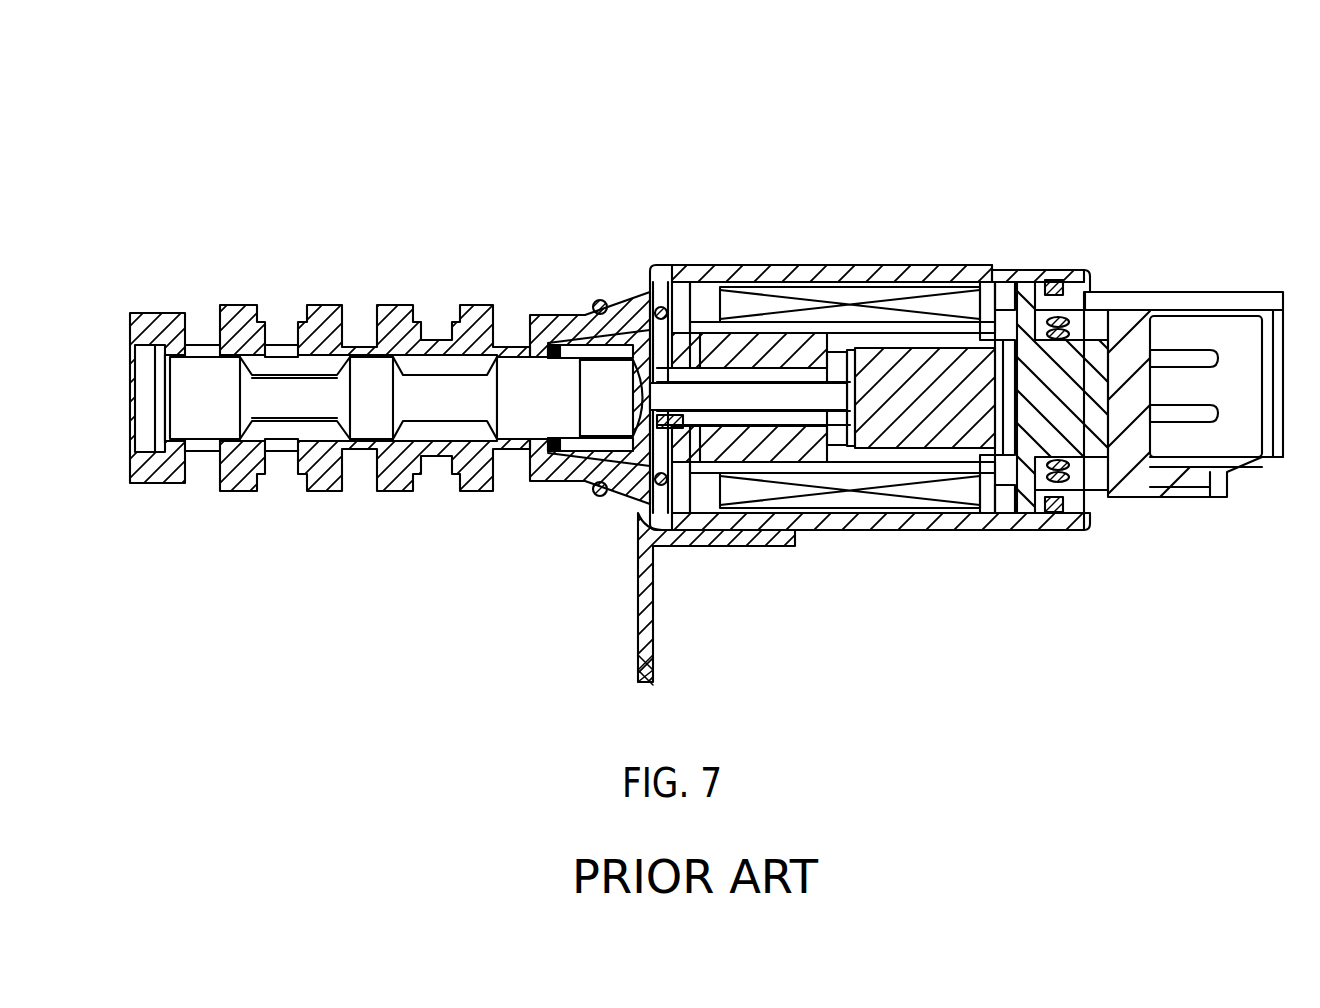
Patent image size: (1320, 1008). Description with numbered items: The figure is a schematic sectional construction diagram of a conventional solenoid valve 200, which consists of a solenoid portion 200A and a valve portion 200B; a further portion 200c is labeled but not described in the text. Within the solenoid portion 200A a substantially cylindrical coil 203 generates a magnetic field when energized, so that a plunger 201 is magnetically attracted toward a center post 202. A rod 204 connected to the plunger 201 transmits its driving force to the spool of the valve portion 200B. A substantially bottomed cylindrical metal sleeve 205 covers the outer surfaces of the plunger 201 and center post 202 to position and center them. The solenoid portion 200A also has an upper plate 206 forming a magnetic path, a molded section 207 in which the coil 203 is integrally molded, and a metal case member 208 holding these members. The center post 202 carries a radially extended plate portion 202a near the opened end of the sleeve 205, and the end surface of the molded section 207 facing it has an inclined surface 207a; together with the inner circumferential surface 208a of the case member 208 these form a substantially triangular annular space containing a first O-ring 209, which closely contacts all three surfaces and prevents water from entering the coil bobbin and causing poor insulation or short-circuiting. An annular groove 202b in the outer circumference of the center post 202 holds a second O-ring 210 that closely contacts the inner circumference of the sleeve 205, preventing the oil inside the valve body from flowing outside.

The solenoid valve 200 is at (330, 145).
The solenoid portion 200A is at (930, 205).
The valve portion 200B is at (430, 250).
The valve housing connecting portion 200c is at (545, 310).
The plunger 201 is at (950, 528).
The center post 202 is at (828, 530).
The plate portion 202a is at (690, 265).
The annular groove 202b is at (772, 532).
The coil 203 is at (957, 300).
The rod 204 is at (760, 392).
The sleeve 205 is at (876, 305).
The upper plate 206 is at (1000, 527).
The molded section 207 is at (888, 530).
The inclined surface 207a is at (693, 268).
The case member 208 is at (752, 530).
The inner circumferential surface 208a is at (712, 520).
The first O-ring 209 is at (638, 515).
The second O-ring 210 is at (731, 270).